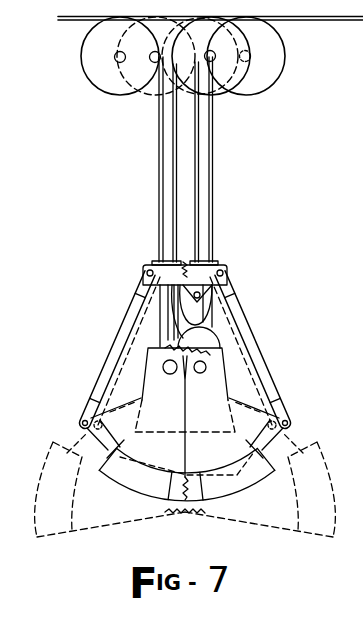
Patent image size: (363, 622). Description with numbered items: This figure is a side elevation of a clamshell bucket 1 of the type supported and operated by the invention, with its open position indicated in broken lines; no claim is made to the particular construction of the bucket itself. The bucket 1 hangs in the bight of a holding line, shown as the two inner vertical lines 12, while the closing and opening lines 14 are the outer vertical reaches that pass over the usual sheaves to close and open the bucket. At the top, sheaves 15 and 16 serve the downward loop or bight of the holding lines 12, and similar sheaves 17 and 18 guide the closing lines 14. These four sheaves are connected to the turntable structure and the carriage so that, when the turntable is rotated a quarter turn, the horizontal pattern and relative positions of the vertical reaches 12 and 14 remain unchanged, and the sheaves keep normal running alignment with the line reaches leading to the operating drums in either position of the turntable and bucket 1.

The bucket 1 is at (101, 352).
The holding line 12 is at (195, 178).
The closing lines 14 is at (158, 218).
The sheave 15 is at (219, 97).
The sheave 16 is at (150, 98).
The sheave 17 is at (90, 88).
The sheave 18 is at (273, 88).